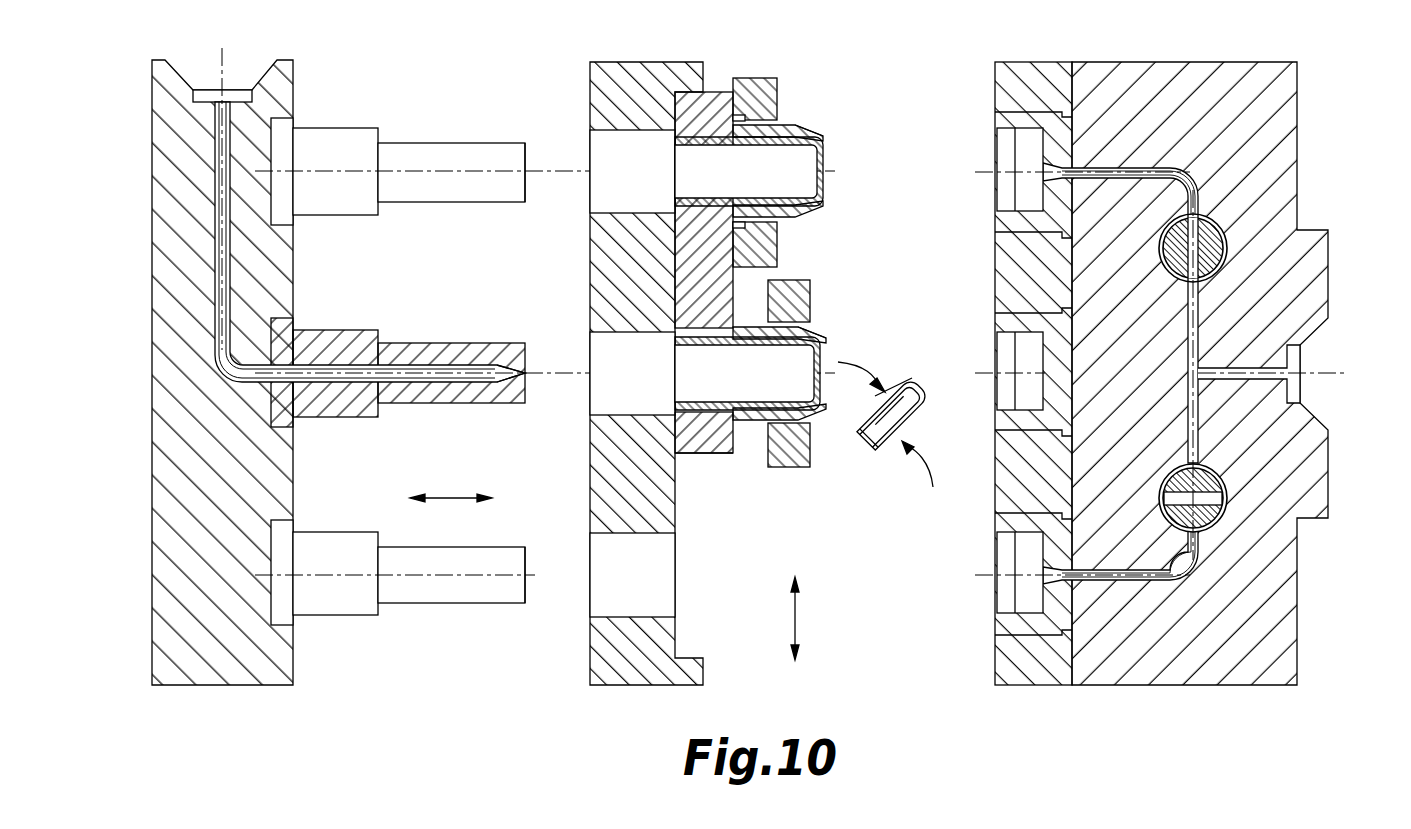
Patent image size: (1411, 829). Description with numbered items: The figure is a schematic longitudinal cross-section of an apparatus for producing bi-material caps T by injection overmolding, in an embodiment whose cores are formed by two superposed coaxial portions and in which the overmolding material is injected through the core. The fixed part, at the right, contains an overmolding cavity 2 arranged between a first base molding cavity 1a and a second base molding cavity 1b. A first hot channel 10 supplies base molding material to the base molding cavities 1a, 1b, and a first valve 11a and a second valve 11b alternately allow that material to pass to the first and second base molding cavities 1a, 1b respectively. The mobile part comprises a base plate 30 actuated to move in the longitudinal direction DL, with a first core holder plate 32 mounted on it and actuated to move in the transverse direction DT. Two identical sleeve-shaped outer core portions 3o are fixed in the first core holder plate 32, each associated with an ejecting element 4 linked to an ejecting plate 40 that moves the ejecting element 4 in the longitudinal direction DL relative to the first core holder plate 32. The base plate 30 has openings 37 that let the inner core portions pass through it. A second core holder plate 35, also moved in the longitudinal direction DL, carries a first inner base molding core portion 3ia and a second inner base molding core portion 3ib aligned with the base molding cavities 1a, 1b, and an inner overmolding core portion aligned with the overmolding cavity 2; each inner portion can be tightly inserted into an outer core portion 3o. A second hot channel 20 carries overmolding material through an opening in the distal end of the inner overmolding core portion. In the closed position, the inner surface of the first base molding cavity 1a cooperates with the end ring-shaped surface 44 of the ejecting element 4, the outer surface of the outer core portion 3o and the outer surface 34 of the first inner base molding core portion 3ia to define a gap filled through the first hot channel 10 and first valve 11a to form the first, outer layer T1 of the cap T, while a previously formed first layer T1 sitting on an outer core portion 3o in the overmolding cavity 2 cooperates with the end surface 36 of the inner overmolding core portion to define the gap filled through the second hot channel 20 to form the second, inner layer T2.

The first base molding cavity 1a is at (1020, 155).
The second base molding cavity 1b is at (1020, 592).
The overmolding cavity 2 is at (1020, 355).
The first inner base molding core portion 3ia is at (460, 150).
The second inner base molding core portion 3ib is at (460, 345).
The outer core portion 3o is at (725, 102).
The ejecting element 4 is at (788, 122).
The first hot channel 10 is at (1240, 380).
The first valve 11a is at (1220, 237).
The second valve 11b is at (1220, 520).
The second hot channel 20 is at (225, 283).
The base plate 30 is at (605, 283).
The first core holder plate 32 is at (703, 455).
The outer surface of first inner base molding core portion 34 is at (528, 163).
The second core holder plate 35 is at (295, 480).
The end surface of inner overmolding core portion 36 is at (527, 380).
The openings 37 is at (665, 578).
The ejecting plate 40 is at (762, 82).
The end ring-shaped surface 44 is at (795, 133).
The cap T is at (891, 443).
The first layer T1 is at (825, 185).
The second layer T2 is at (885, 410).
The longitudinal direction DL is at (450, 495).
The transverse direction DT is at (797, 618).